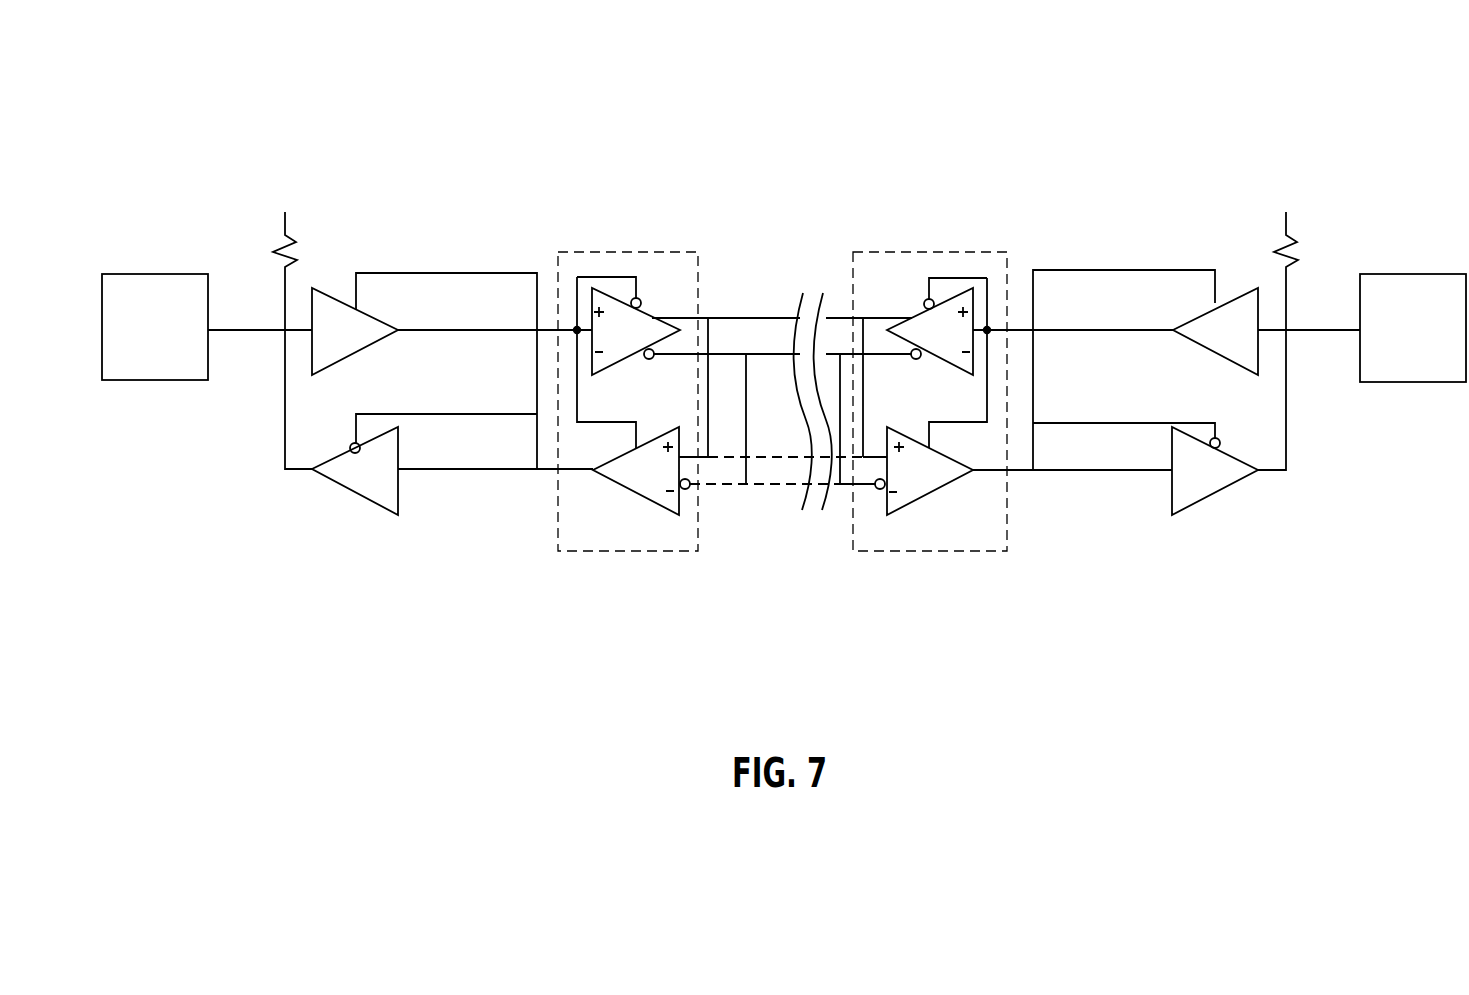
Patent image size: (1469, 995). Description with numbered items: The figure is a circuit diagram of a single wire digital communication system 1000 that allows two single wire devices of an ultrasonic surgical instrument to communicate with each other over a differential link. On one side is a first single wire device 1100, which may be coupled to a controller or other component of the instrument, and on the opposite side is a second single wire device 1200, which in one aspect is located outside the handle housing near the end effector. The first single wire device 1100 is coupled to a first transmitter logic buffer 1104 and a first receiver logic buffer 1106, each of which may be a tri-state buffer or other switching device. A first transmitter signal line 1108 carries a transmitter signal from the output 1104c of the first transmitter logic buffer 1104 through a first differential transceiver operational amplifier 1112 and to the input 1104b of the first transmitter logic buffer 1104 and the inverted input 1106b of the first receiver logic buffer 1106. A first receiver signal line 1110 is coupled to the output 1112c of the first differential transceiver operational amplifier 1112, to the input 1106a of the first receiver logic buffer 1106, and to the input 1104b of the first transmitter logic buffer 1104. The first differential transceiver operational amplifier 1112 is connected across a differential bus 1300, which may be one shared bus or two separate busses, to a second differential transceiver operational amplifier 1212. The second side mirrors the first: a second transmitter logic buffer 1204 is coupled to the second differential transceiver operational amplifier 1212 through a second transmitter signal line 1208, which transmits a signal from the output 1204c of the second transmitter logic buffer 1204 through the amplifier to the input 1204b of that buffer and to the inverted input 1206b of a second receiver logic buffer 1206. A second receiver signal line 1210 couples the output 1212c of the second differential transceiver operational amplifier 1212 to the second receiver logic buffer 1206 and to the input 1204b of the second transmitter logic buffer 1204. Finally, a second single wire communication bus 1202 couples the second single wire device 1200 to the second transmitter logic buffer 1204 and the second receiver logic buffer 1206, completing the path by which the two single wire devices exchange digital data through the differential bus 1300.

The single wire digital communication system 1000 is at (804, 73).
The first single wire device 1100 is at (1435, 274).
The first transmitter logic buffer 1104 is at (1233, 293).
The input of the first transmitter logic buffer 1104b is at (1215, 303).
The output of the first transmitter logic buffer 1104c is at (1173, 330).
The first receiver logic buffer 1106 is at (1225, 492).
The input of the first receiver logic buffer 1106a is at (1172, 470).
The inverted input of the first receiver logic buffer 1106b is at (1220, 442).
The first transmitter signal line 1108 is at (1092, 330).
The first receiver signal line 1110 is at (1065, 472).
The first differential transceiver operational amplifier 1112 is at (949, 467).
The output of the first differential transceiver operational amplifier 1112c is at (973, 472).
The second single wire device 1200 is at (177, 274).
The second single wire communication bus 1202 is at (212, 330).
The second transmitter logic buffer 1204 is at (320, 290).
The input of the second transmitter logic buffer 1204b is at (356, 307).
The output of the second transmitter logic buffer 1204c is at (398, 330).
The second receiver logic buffer 1206 is at (352, 493).
The inverted input of the second receiver logic buffer 1206b is at (350, 452).
The second transmitter signal line 1208 is at (487, 328).
The second receiver signal line 1210 is at (517, 472).
The second differential transceiver operational amplifier 1212 is at (710, 451).
The output of the second differential transceiver operational amplifier 1212c is at (593, 475).
The differential bus 1300 is at (836, 287).